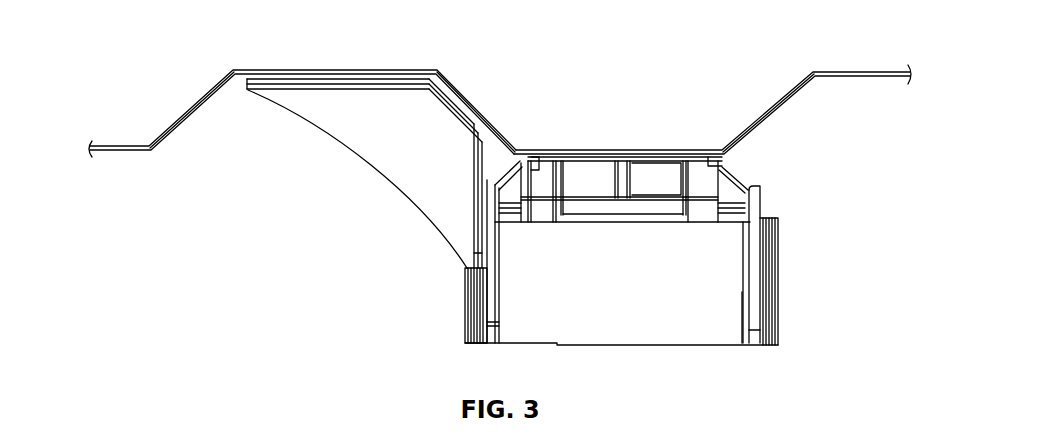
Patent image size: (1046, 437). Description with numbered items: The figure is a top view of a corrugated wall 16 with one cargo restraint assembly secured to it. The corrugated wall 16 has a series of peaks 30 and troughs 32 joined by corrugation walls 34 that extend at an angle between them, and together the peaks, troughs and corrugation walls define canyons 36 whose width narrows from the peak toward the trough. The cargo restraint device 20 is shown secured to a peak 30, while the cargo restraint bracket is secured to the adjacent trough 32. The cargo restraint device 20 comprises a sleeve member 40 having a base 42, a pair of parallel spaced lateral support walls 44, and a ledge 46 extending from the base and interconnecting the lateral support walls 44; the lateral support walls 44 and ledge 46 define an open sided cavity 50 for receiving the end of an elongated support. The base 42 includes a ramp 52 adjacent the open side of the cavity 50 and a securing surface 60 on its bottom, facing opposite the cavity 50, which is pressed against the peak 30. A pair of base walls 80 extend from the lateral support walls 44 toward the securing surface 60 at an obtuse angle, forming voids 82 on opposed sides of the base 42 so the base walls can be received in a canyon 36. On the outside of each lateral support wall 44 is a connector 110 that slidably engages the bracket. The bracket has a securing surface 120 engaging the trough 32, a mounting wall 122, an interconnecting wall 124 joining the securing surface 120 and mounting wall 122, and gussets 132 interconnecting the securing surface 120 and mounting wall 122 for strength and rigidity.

The corrugated wall 16 is at (858, 76).
The cargo restraint device 20 is at (763, 200).
The peak 30 is at (537, 150).
The trough 32 is at (367, 72).
The corrugation wall 34 is at (187, 110).
The canyon 36 is at (202, 105).
The sleeve member 40 is at (753, 292).
The base 42 is at (612, 152).
The lateral support wall 44 is at (490, 275).
The ledge 46 is at (645, 320).
The cavity 50 is at (498, 322).
The ramp 52 is at (655, 173).
The securing surface 60 is at (575, 155).
The base wall 80 is at (500, 158).
The void 82 is at (497, 171).
The connector 110 is at (465, 317).
The securing surface 120 is at (322, 80).
The mounting wall 122 is at (482, 207).
The interconnecting wall 124 is at (443, 93).
The gusset 132 is at (367, 127).